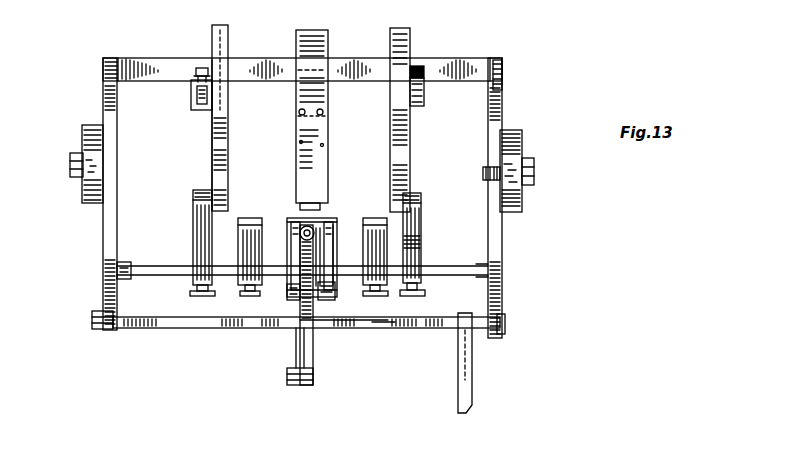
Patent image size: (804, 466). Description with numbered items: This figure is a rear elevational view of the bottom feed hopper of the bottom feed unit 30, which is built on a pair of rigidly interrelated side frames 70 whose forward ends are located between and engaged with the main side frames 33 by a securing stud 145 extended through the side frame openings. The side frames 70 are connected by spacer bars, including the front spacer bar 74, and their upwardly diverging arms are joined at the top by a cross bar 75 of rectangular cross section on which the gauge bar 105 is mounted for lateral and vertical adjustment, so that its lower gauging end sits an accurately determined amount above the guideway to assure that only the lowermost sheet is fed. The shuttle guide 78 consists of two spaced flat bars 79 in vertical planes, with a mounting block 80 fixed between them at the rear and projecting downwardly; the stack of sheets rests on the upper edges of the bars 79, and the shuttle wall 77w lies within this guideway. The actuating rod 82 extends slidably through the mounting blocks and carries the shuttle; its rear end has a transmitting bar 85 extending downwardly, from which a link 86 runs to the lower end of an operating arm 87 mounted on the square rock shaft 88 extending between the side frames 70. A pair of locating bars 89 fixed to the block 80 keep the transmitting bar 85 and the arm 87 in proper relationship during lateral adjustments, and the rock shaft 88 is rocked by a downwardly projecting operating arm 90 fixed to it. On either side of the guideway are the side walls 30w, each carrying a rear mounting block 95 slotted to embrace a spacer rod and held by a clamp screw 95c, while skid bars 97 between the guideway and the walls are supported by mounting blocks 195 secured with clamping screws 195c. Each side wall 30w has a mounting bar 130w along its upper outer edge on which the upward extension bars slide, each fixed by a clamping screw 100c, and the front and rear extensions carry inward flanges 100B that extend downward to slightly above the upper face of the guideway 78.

The bottom feed unit 30 is at (520, 266).
The side walls 30w is at (206, 152).
The main side frames 33 is at (84, 190).
The side frames 70 is at (102, 240).
The spacer bar 74 is at (146, 268).
The cross bar 75 is at (448, 66).
The wall 77w is at (332, 214).
The shuttle guide 78 is at (338, 216).
The flat bars 79 is at (287, 228).
The mounting block 80 is at (326, 256).
The actuating rod 82 is at (302, 240).
The transmitting bar 85 is at (282, 306).
The link 86 is at (294, 360).
The operating arm 87 is at (312, 340).
The rock shaft 88 is at (372, 323).
The locating bars 89 is at (287, 292).
The operating arm 90 is at (470, 393).
The rear mounting block 95 is at (193, 230).
The clamp screws 95c is at (192, 293).
The skid bars 97 is at (250, 216).
The flanges 100B is at (192, 108).
The clamping screw 100c is at (200, 66).
The gauge bar 105 is at (308, 42).
The mounting bar 130w is at (194, 95).
The securing stud 145 is at (70, 160).
The mounting blocks 195 is at (226, 318).
The clamping screws 195c is at (394, 326).